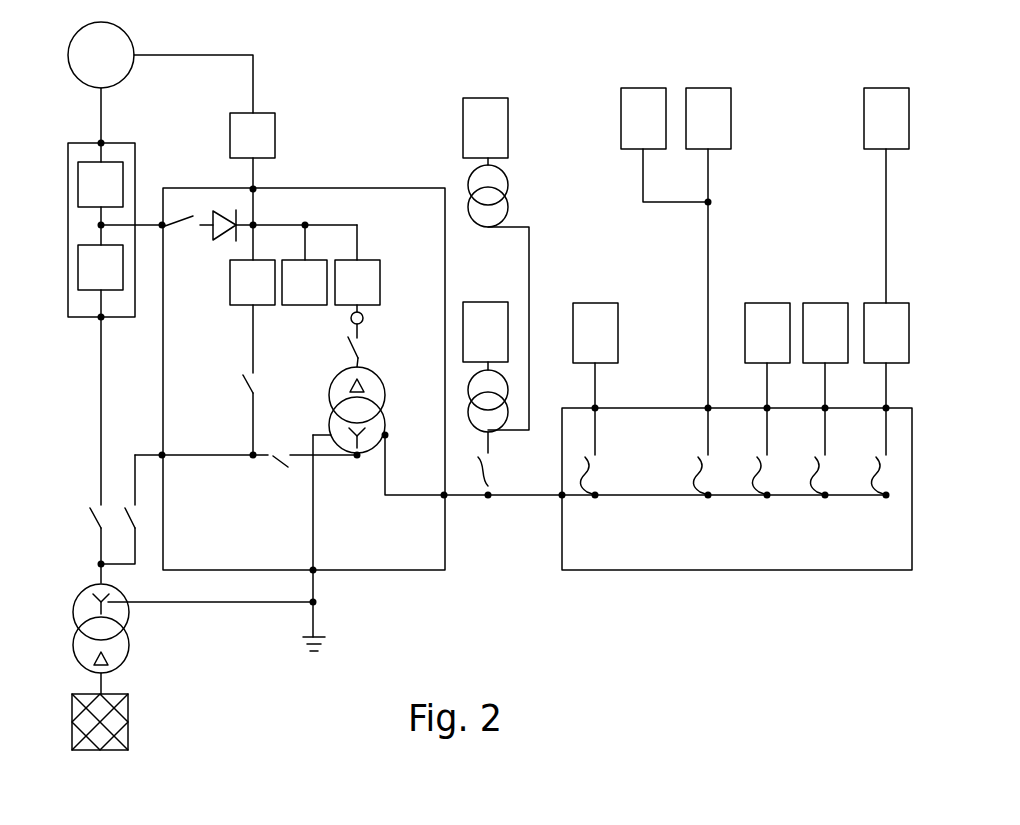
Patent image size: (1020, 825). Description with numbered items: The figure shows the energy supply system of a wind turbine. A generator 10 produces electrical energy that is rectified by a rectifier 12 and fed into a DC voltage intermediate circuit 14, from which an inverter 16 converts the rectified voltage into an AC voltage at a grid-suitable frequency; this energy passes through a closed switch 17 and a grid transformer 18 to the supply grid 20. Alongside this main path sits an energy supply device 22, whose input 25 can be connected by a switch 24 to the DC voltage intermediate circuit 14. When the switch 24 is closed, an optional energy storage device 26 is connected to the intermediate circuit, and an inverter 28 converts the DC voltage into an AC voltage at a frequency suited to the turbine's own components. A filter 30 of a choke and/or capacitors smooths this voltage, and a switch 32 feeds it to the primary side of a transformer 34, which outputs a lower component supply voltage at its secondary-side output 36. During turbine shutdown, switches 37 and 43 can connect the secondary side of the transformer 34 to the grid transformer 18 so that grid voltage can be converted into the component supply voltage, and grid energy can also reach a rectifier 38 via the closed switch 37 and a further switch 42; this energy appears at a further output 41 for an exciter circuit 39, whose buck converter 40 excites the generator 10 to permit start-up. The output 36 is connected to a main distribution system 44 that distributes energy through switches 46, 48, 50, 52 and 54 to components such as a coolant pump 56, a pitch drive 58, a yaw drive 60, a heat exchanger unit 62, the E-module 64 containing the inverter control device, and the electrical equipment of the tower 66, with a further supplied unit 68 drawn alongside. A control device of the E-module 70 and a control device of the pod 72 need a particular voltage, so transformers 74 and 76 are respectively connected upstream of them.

The generator 10 is at (88, 69).
The rectifier 12 is at (87, 199).
The DC voltage intermediate circuit 14 is at (125, 232).
The inverter 16 is at (87, 282).
The switch 17 is at (88, 533).
The grid transformer 18 is at (130, 617).
The supply grid 20 is at (128, 710).
The energy supply device 22 is at (357, 188).
The switch 24 is at (184, 229).
The input 25 is at (162, 224).
The energy storage device 26 is at (291, 297).
The inverter 28 is at (344, 297).
The filter 30 is at (370, 316).
The switch 32 is at (370, 350).
The transformer 34 is at (388, 405).
The output 36 is at (387, 437).
The switch 37 is at (147, 517).
The rectifier 38 is at (239, 297).
The exciter circuit 39 is at (264, 105).
The buck converter 40 is at (239, 150).
The further output 41 is at (257, 187).
The switch 42 is at (241, 393).
The switch 43 is at (280, 450).
The main distribution system 44 is at (640, 572).
The switch 46 is at (592, 500).
The switch 48 is at (705, 499).
The switch 50 is at (770, 499).
The switch 52 is at (828, 499).
The switch 54 is at (888, 499).
The coolant pump 56 is at (582, 347).
The pitch drive 58 is at (630, 133).
The yaw drive 60 is at (695, 133).
The heat exchanger unit 62 is at (754, 347).
The E-module 64 is at (812, 347).
The electrical equipment of the tower 66 is at (873, 347).
The consumer 68 is at (873, 133).
The control device of the E-module 70 is at (472, 346).
The control device of the pod 72 is at (472, 142).
The transformer 74 is at (472, 433).
The transformer 76 is at (512, 178).